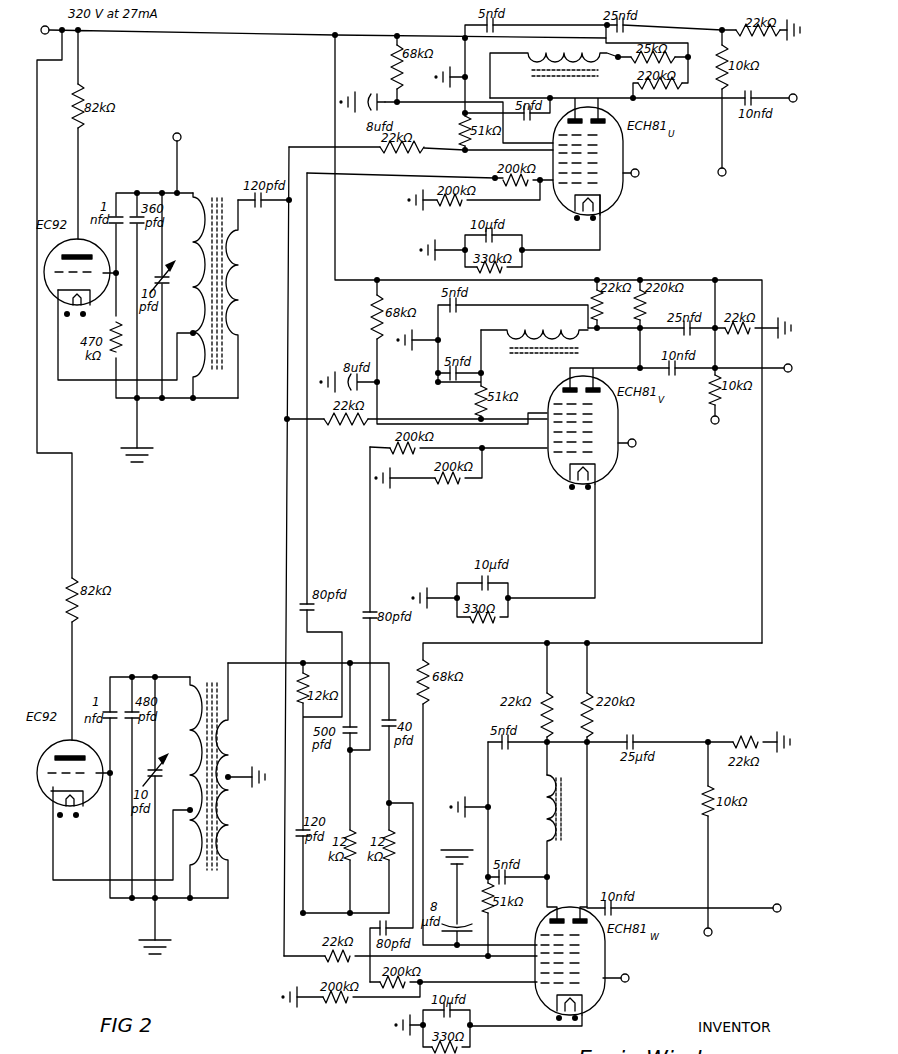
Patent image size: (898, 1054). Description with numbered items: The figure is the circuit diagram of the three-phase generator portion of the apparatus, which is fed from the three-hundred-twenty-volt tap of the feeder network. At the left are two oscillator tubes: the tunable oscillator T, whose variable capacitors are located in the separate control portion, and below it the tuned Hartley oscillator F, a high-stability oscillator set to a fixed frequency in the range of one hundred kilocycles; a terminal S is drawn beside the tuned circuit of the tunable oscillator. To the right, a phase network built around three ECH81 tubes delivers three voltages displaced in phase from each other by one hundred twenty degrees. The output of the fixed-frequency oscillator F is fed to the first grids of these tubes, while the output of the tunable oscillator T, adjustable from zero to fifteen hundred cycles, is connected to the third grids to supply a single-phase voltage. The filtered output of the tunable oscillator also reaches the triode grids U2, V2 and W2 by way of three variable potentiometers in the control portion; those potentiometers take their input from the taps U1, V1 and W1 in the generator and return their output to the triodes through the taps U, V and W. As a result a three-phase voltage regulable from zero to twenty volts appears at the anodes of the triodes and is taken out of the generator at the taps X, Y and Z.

The switch terminal S is at (182, 160).
The tunable oscillator T is at (78, 240).
The tuned Hartley oscillator F is at (72, 740).
The tap U is at (601, 164).
The tap U1 is at (723, 113).
The triode grid U2 is at (603, 174).
The tap V is at (598, 433).
The tap V1 is at (722, 359).
The triode grid V2 is at (603, 443).
The tap W is at (590, 964).
The tap W1 is at (715, 848).
The triode grid W2 is at (590, 980).
The tap X is at (777, 101).
The tap Y is at (736, 373).
The tap Z is at (691, 914).